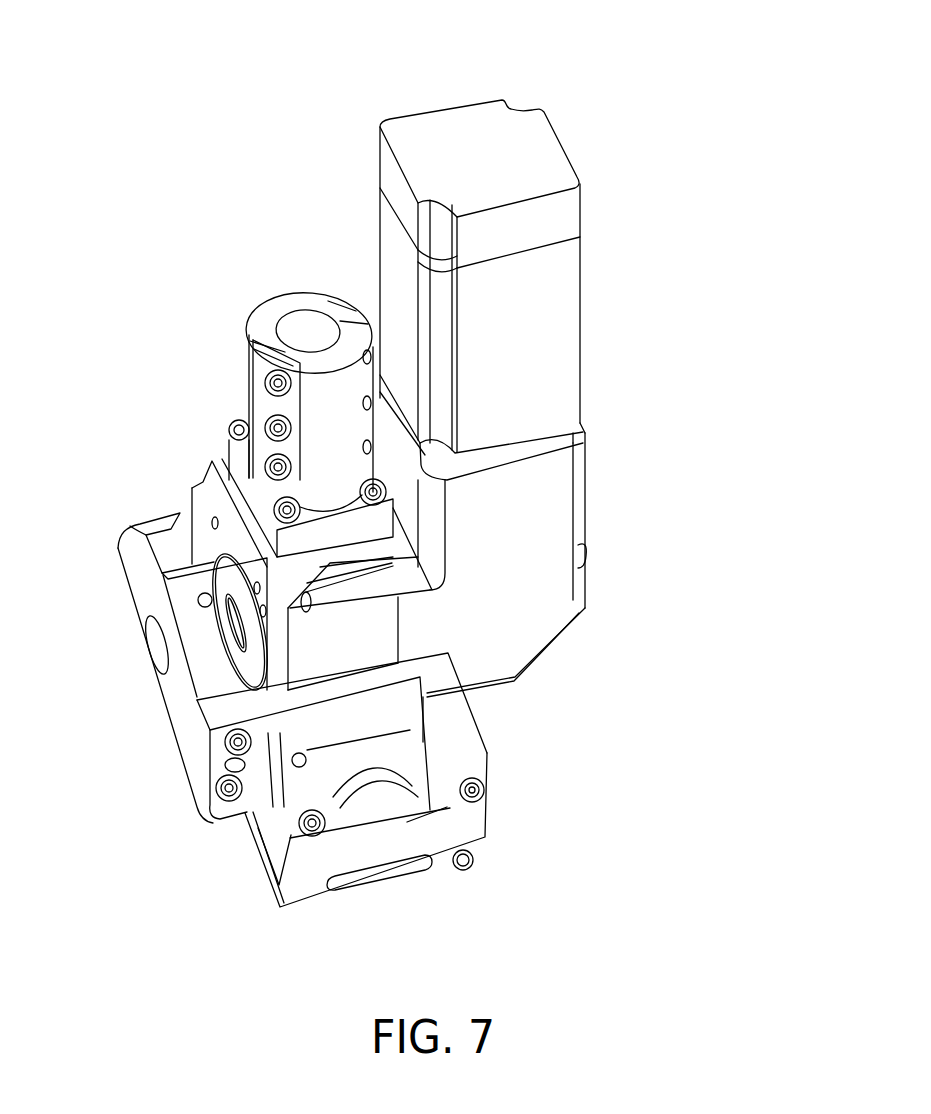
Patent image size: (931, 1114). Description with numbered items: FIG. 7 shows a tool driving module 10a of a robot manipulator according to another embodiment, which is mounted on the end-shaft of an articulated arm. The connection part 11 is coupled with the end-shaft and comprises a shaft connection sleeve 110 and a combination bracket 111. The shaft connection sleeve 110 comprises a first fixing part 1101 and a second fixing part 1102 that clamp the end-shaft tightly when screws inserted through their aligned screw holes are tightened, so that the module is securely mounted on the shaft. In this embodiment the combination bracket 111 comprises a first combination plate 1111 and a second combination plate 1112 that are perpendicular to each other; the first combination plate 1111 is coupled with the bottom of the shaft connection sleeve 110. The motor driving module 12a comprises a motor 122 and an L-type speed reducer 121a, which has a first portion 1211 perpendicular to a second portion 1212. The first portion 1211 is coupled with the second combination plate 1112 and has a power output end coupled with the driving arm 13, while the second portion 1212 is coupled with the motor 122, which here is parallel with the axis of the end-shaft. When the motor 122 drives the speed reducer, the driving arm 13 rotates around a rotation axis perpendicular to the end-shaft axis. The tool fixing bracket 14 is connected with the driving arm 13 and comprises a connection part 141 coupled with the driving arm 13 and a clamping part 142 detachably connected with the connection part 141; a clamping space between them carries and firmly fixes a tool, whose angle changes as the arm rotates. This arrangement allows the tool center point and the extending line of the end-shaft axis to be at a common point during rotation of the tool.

The tool driving module 10a is at (784, 35).
The connection part 11 is at (55, 338).
The shaft connection sleeve 110 is at (108, 320).
The first fixing part 1101 is at (258, 318).
The second fixing part 1102 is at (267, 352).
The combination bracket 111 is at (108, 423).
The first combination plate 1111 is at (312, 558).
The second combination plate 1112 is at (247, 537).
The motor driving module 12a is at (747, 352).
The motor 122 is at (548, 375).
The L-type speed reducer 121a is at (673, 498).
The second portion 1212 is at (542, 513).
The first portion 1211 is at (357, 647).
The driving arm 13 is at (138, 593).
The tool fixing bracket 14 is at (563, 723).
The connection part 141 is at (438, 670).
The clamping part 142 is at (463, 832).